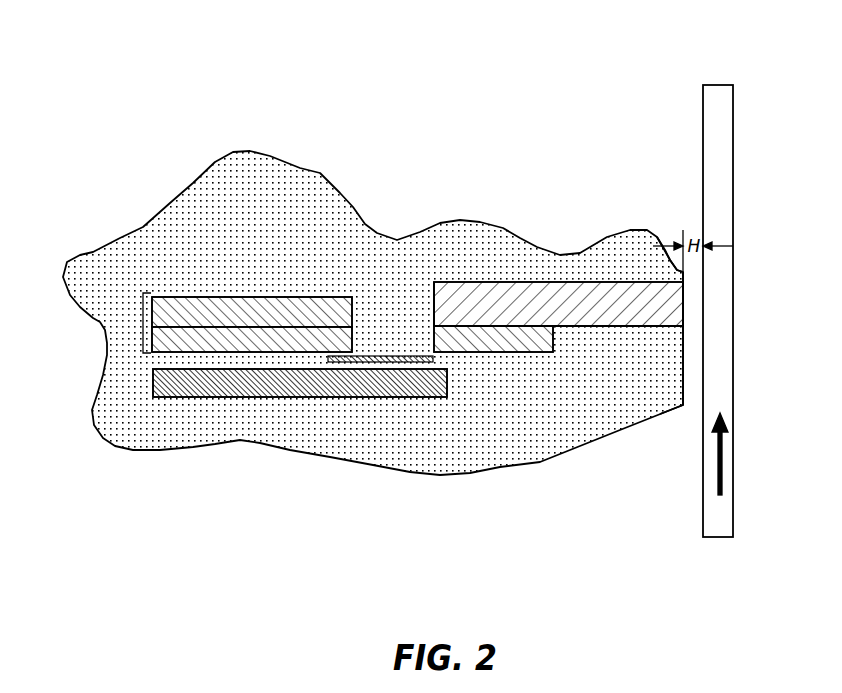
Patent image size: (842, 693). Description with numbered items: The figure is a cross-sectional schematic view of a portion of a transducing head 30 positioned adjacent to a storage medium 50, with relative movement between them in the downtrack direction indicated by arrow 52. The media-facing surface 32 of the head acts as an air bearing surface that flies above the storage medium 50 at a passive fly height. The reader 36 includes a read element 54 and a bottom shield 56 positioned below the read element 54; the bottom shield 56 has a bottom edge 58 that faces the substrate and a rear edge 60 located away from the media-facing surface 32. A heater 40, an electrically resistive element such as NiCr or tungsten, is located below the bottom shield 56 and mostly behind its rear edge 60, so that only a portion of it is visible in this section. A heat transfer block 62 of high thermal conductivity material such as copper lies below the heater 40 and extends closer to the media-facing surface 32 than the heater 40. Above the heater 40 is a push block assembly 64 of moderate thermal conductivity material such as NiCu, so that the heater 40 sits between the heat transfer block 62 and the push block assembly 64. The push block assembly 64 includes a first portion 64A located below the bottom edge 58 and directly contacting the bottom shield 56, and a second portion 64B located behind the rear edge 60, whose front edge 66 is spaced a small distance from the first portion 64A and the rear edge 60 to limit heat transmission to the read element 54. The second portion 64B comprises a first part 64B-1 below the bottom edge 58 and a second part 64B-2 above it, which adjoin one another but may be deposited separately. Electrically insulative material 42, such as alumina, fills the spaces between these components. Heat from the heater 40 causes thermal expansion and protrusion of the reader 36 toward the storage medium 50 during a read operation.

The transducing head 30 is at (275, 74).
The media-facing surface 32 is at (689, 417).
The reader 36 is at (702, 277).
The heater 40 is at (385, 362).
The electrically insulative material 42 is at (302, 195).
The storage medium 50 is at (703, 533).
The arrow 52 is at (718, 472).
The read element 54 is at (673, 276).
The bottom shield 56 is at (595, 297).
The bottom edge 58 is at (585, 330).
The rear edge 60 is at (433, 303).
The heat transfer block 62 is at (280, 388).
The push block assembly 64 is at (192, 319).
The first portion 64A is at (510, 340).
The second portion 64B is at (192, 319).
The first part 64B-1 is at (205, 345).
The second part 64B-2 is at (213, 307).
The front edge 66 is at (353, 308).